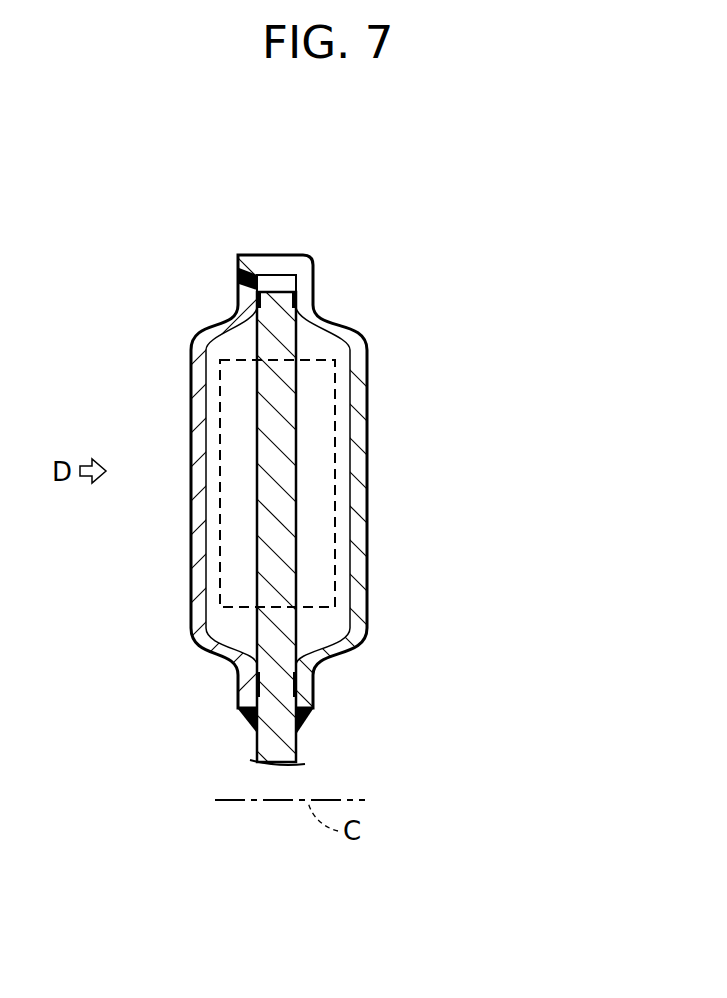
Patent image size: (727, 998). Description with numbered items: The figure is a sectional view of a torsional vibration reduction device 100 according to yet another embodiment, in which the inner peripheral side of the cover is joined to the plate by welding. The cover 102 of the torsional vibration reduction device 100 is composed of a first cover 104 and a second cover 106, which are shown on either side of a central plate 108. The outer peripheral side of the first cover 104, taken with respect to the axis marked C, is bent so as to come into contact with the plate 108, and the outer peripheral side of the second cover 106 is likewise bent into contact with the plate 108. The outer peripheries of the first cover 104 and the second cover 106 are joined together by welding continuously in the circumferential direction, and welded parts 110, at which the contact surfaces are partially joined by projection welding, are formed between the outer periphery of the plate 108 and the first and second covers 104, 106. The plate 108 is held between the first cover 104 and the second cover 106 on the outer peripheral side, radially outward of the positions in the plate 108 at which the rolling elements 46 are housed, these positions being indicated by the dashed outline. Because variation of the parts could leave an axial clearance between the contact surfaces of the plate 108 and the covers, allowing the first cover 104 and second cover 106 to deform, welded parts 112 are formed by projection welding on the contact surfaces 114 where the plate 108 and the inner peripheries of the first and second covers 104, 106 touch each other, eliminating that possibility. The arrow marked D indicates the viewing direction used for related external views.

The torsional vibration reduction device 100 is at (465, 349).
The cover 102 is at (348, 266).
The first cover 104 is at (198, 438).
The second cover 106 is at (352, 438).
The plate 108 is at (283, 498).
The welded parts 110 is at (257, 300).
The welded parts 112 is at (258, 682).
The contact surfaces 114 is at (253, 700).
The rolling elements 46 is at (240, 560).